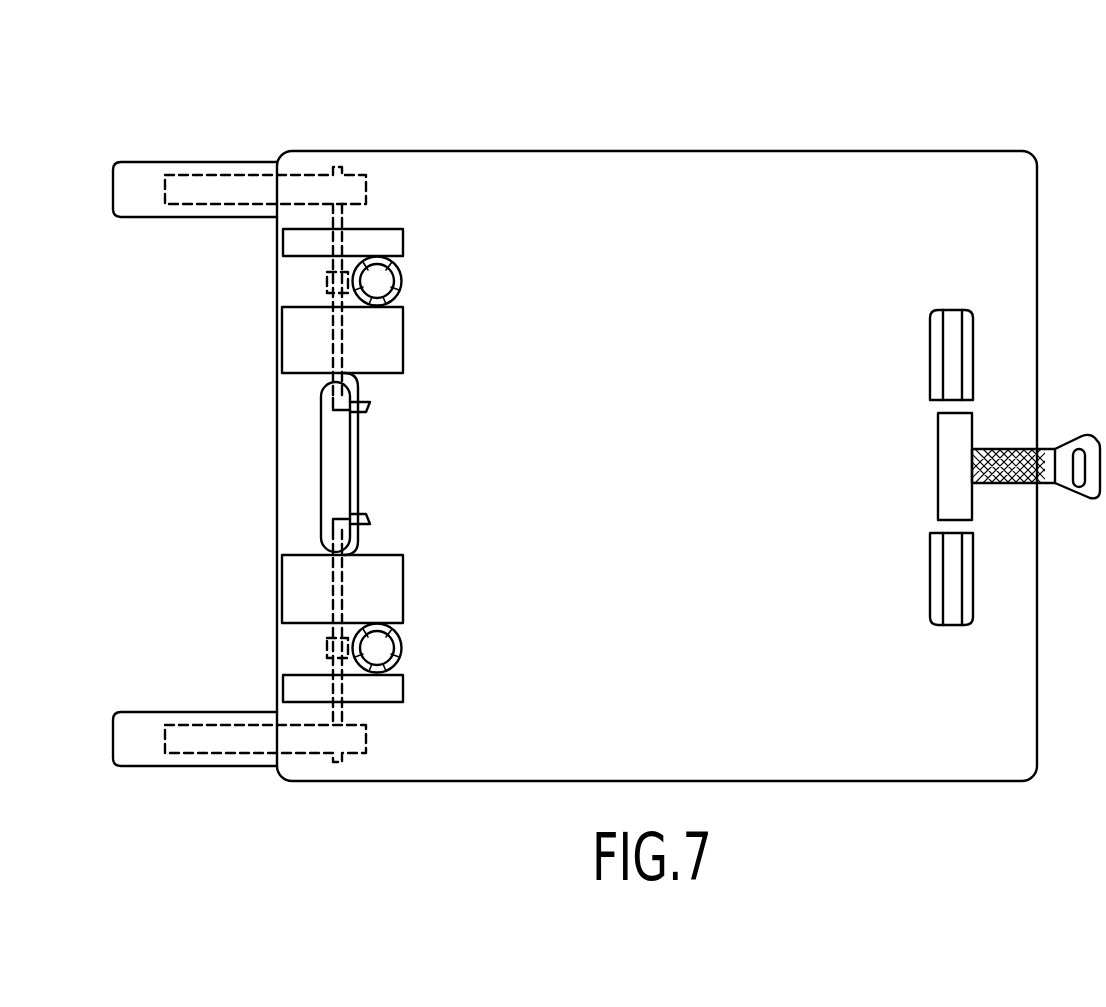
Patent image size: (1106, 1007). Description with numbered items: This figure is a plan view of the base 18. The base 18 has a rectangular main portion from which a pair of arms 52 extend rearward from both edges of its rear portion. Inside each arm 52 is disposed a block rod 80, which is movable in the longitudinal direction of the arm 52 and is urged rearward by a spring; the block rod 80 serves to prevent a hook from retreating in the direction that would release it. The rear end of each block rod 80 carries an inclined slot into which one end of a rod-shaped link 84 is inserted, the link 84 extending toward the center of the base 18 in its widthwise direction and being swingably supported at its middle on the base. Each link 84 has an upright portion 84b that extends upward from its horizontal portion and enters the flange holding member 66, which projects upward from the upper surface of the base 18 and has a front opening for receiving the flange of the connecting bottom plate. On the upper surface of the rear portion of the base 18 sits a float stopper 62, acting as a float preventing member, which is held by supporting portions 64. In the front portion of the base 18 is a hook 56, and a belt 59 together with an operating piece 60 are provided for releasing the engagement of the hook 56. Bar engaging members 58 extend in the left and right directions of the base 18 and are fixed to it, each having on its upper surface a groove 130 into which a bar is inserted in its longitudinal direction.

The base 18 is at (804, 132).
The arms 52 is at (155, 218).
The block rod 80 is at (228, 201).
The supporting portions 64 is at (404, 237).
The float stopper 62 is at (403, 277).
The link 84 is at (340, 326).
The upright portion 84b is at (374, 406).
The flange holding member 66 is at (385, 452).
The bar engaging members 58 is at (930, 348).
The groove 130 is at (952, 320).
The hook 56 is at (945, 463).
The belt 59 is at (1005, 485).
The operating piece 60 is at (1090, 500).